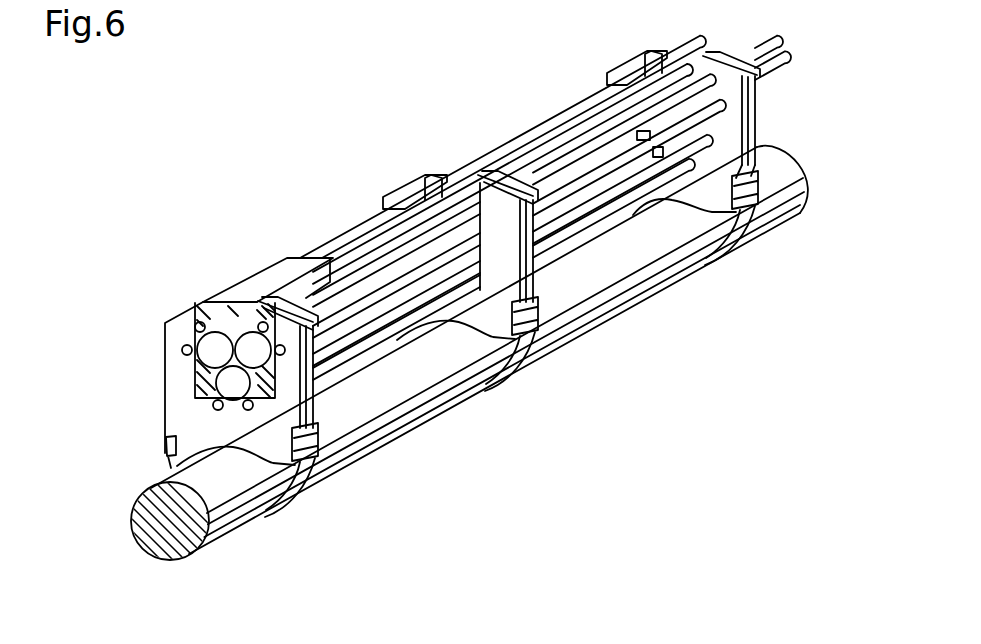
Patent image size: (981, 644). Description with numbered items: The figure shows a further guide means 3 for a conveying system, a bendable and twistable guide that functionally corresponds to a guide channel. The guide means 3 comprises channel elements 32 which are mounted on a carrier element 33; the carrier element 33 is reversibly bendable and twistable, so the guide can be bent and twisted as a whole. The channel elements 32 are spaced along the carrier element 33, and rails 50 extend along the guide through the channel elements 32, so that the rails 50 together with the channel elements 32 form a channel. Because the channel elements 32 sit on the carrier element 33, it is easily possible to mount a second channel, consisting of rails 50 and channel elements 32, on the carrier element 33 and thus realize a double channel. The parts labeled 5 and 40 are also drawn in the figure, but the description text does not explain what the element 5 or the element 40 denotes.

The tube 3 is at (655, 313).
The support device 5 is at (256, 280).
The clamp bracket 32 is at (313, 395).
The tube surface line 33 is at (427, 393).
The rollers 40 is at (205, 396).
The rods 50 is at (563, 157).